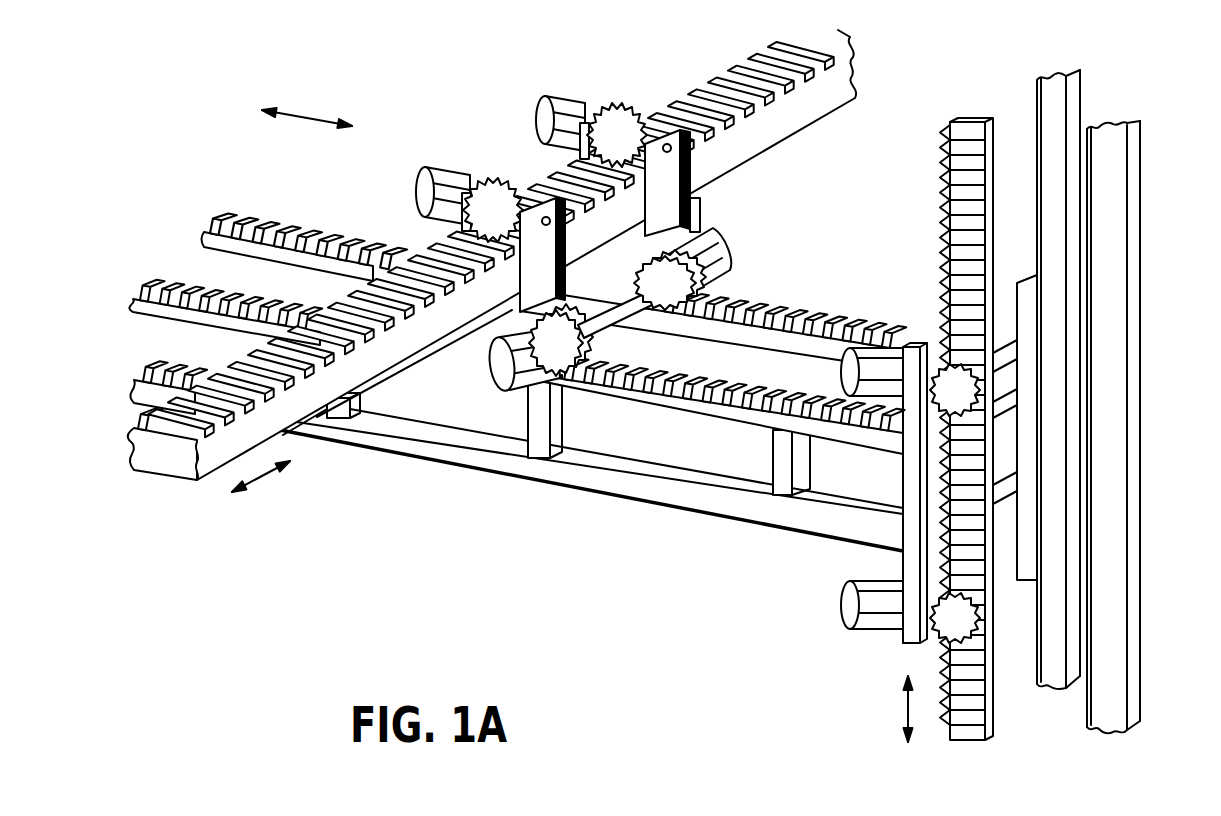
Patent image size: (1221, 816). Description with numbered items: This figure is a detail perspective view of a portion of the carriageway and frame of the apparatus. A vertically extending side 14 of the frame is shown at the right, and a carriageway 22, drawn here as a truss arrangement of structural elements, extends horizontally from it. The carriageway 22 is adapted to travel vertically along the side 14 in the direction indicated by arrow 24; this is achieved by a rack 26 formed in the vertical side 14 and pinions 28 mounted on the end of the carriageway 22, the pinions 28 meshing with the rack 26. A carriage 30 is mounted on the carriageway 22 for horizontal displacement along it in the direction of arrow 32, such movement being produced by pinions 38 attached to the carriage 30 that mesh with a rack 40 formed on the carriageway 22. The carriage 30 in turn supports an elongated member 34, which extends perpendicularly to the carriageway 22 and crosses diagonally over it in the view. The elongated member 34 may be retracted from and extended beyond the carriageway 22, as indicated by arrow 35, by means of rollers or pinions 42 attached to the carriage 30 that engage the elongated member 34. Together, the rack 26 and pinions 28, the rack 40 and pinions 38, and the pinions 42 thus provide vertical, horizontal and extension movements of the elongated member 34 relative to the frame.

The vertically extending side 14 is at (1133, 537).
The carriageway 22 is at (540, 420).
The arrow 24 is at (897, 701).
The rack 26 is at (940, 191).
The pinion 28 is at (933, 415).
The carriage 30 is at (700, 212).
The arrow 32 is at (308, 110).
The elongated member 34 is at (830, 85).
The arrow 35 is at (261, 482).
The pinion 38 is at (712, 285).
The rack 40 is at (797, 312).
The roller or pinion 42 is at (517, 182).